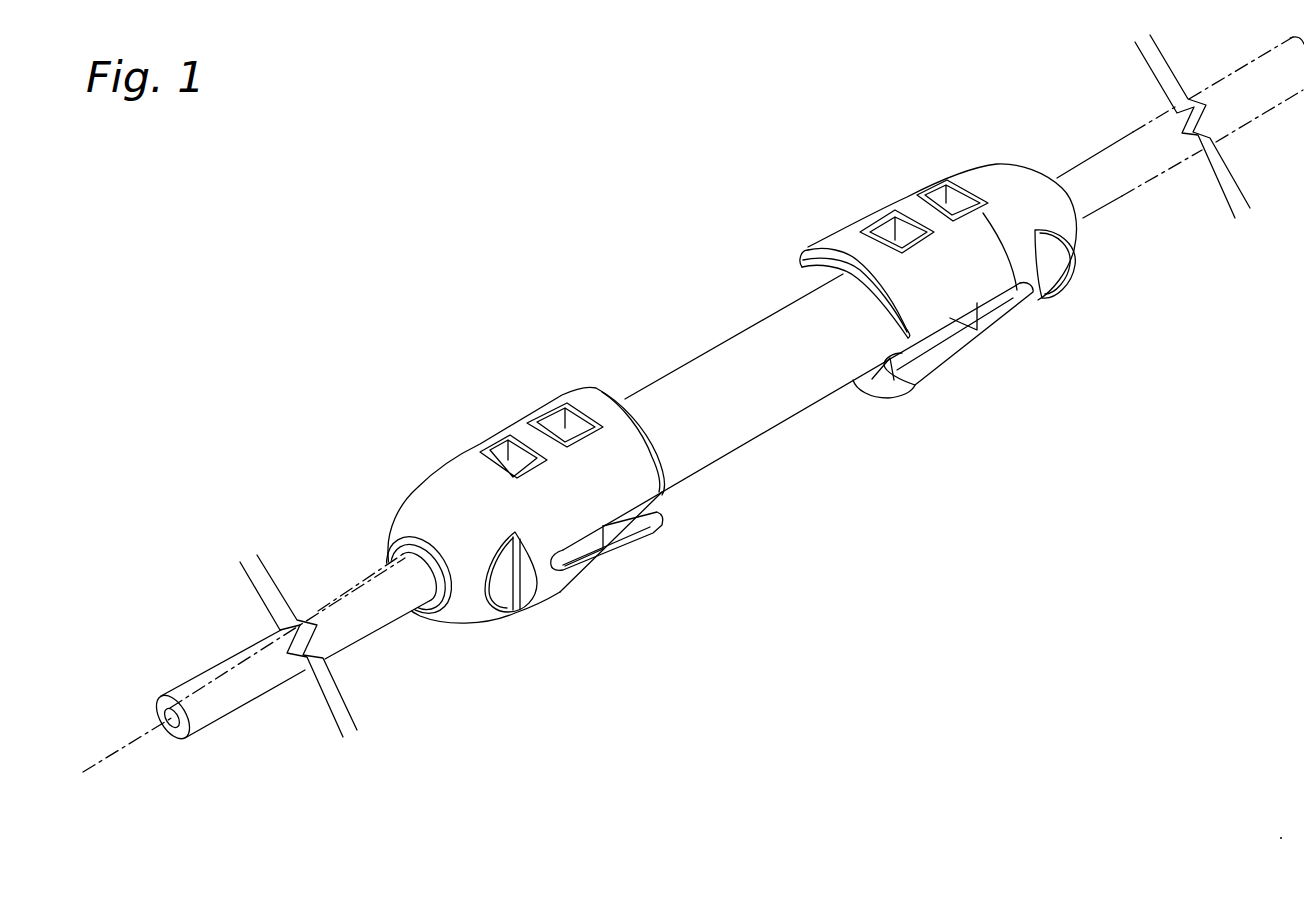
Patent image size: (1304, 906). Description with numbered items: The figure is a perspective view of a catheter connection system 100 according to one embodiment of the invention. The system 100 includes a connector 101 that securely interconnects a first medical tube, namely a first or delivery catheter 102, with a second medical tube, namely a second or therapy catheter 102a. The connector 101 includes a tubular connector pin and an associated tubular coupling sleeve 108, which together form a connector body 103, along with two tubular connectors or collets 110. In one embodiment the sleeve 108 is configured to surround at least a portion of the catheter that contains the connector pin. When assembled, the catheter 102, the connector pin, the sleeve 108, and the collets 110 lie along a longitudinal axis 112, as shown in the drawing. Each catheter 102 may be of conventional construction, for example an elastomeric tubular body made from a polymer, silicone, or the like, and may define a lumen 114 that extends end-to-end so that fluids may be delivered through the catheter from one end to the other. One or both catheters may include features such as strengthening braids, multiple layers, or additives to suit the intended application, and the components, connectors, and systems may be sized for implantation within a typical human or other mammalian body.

The catheter connection system 100 is at (716, 395).
The connector 101 is at (593, 608).
The first or delivery catheter 102 is at (1133, 132).
The second or therapy catheter 102a is at (313, 605).
The connector body 103 is at (728, 338).
The tubular coupling sleeve 108 is at (730, 455).
The tubular connectors or collets 110 is at (434, 468).
The longitudinal axis 112 is at (108, 757).
The lumen 114 is at (170, 717).